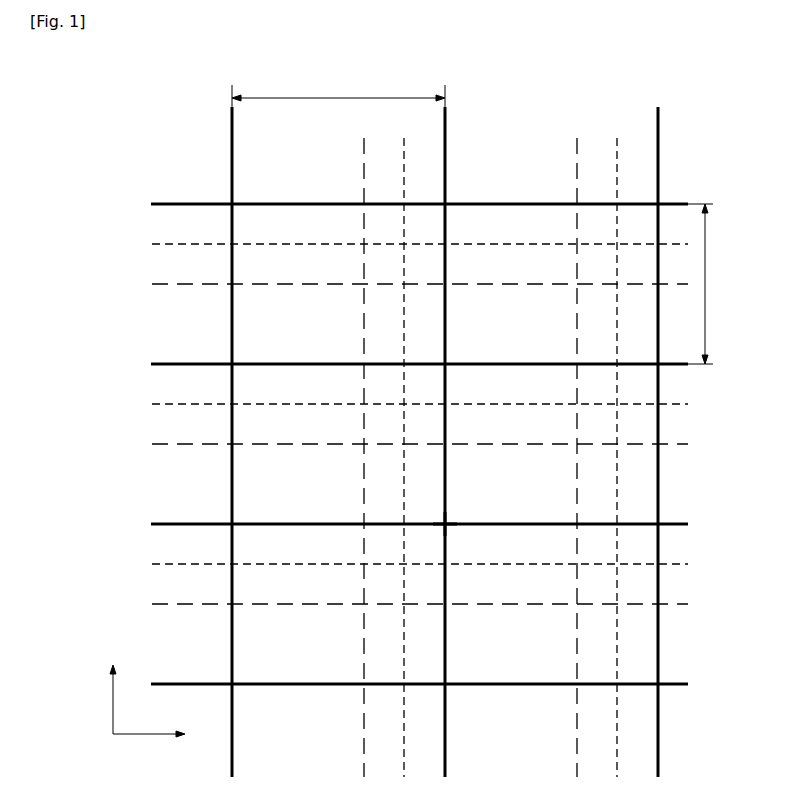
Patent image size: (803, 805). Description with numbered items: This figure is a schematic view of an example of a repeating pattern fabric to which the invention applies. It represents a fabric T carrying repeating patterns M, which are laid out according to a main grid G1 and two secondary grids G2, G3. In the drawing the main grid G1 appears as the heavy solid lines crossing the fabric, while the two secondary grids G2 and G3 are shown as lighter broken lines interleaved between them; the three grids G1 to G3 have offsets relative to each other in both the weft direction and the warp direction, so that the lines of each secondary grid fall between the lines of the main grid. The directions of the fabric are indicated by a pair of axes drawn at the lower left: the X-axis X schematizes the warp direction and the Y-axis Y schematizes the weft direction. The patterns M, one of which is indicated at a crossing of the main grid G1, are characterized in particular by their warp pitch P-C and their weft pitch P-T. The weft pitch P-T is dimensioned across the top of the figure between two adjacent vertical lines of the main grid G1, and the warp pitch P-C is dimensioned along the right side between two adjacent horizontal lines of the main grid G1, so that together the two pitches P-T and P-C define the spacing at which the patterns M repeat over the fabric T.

The fabric T is at (532, 119).
The main grid G1 is at (232, 172).
The secondary grid G2 is at (363, 313).
The secondary grid G3 is at (405, 366).
The repeating pattern M is at (447, 510).
The weft pitch P-T is at (338, 87).
The warp pitch P-C is at (720, 284).
The X-axis X is at (150, 722).
The Y-axis Y is at (105, 697).